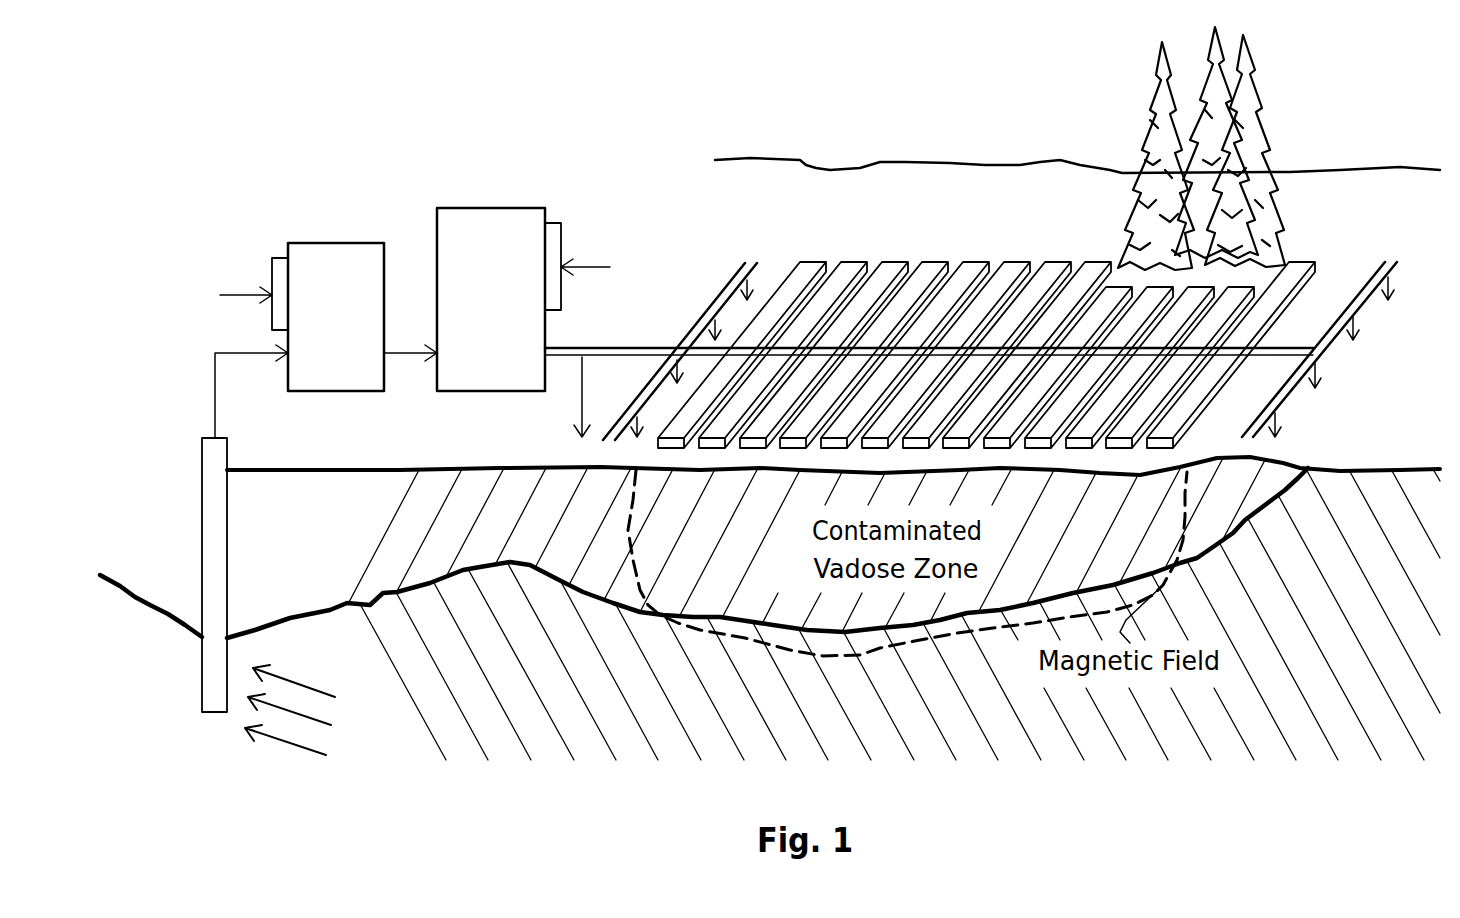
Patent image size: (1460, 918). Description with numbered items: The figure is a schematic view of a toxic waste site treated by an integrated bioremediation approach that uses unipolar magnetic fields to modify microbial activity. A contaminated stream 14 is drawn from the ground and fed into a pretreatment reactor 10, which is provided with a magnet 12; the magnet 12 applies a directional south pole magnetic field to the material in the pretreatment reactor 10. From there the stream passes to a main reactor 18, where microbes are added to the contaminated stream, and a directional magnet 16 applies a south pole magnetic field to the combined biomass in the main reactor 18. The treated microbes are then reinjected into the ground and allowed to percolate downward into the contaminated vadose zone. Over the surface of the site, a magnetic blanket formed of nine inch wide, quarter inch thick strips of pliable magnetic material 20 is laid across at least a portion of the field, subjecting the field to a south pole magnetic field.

The pretreatment reactor 10 is at (328, 317).
The magnet 12 is at (228, 296).
The contaminated stream 14 is at (215, 370).
The directional magnet 16 is at (601, 268).
The main reactor 18 is at (499, 299).
The strips of pliable magnetic material 20 is at (933, 260).